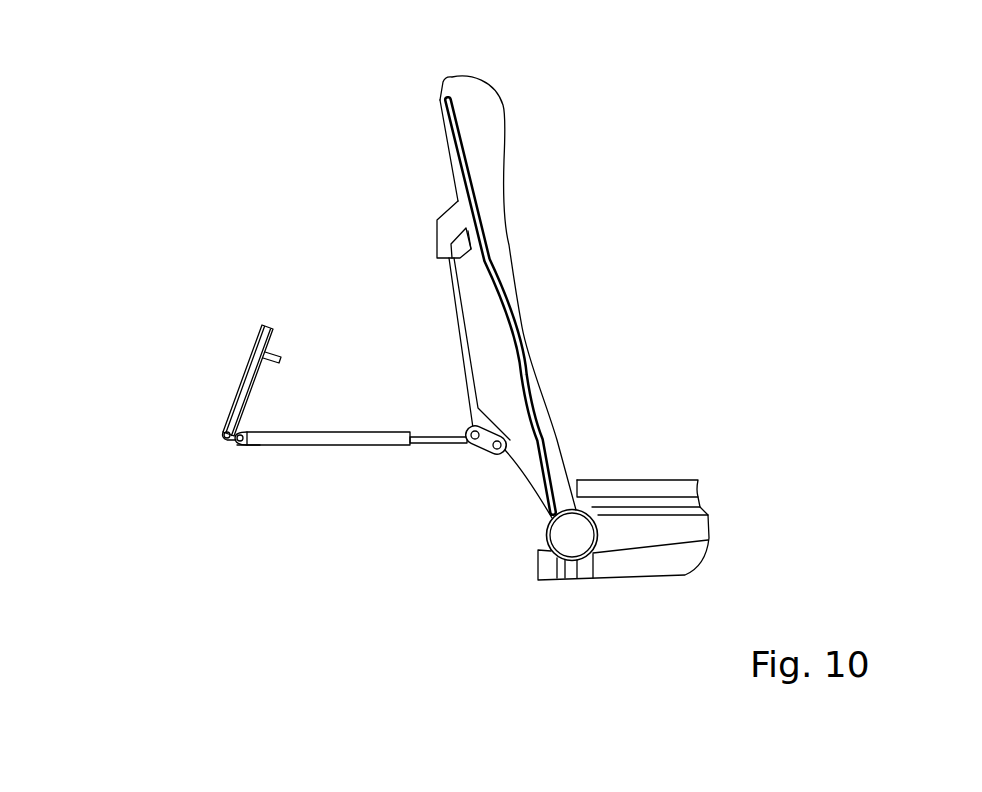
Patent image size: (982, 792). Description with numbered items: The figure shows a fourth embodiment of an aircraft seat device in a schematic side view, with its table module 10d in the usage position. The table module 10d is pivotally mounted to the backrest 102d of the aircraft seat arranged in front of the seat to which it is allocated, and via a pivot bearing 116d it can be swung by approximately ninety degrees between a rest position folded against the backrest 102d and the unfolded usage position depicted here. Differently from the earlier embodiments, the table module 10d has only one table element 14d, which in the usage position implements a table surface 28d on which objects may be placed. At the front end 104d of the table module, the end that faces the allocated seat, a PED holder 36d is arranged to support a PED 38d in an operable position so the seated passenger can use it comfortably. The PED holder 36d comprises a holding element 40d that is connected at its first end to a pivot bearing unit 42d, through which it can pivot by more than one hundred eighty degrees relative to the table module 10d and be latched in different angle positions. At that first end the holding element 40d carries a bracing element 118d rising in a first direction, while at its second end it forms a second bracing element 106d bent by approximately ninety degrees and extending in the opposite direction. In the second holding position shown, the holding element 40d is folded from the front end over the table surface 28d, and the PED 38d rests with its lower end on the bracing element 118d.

The table module 10d is at (337, 368).
The table element 14d is at (335, 446).
The table surface 28d is at (379, 422).
The PED holder 36d is at (210, 415).
The PED 38d is at (252, 352).
The holding element 40d is at (253, 400).
The pivot bearing unit 42d is at (234, 453).
The backrest 102d is at (503, 263).
The front end 104d is at (249, 461).
The second bracing element 106d is at (280, 343).
The pivot bearing 116d is at (482, 461).
The bracing element 118d is at (224, 437).